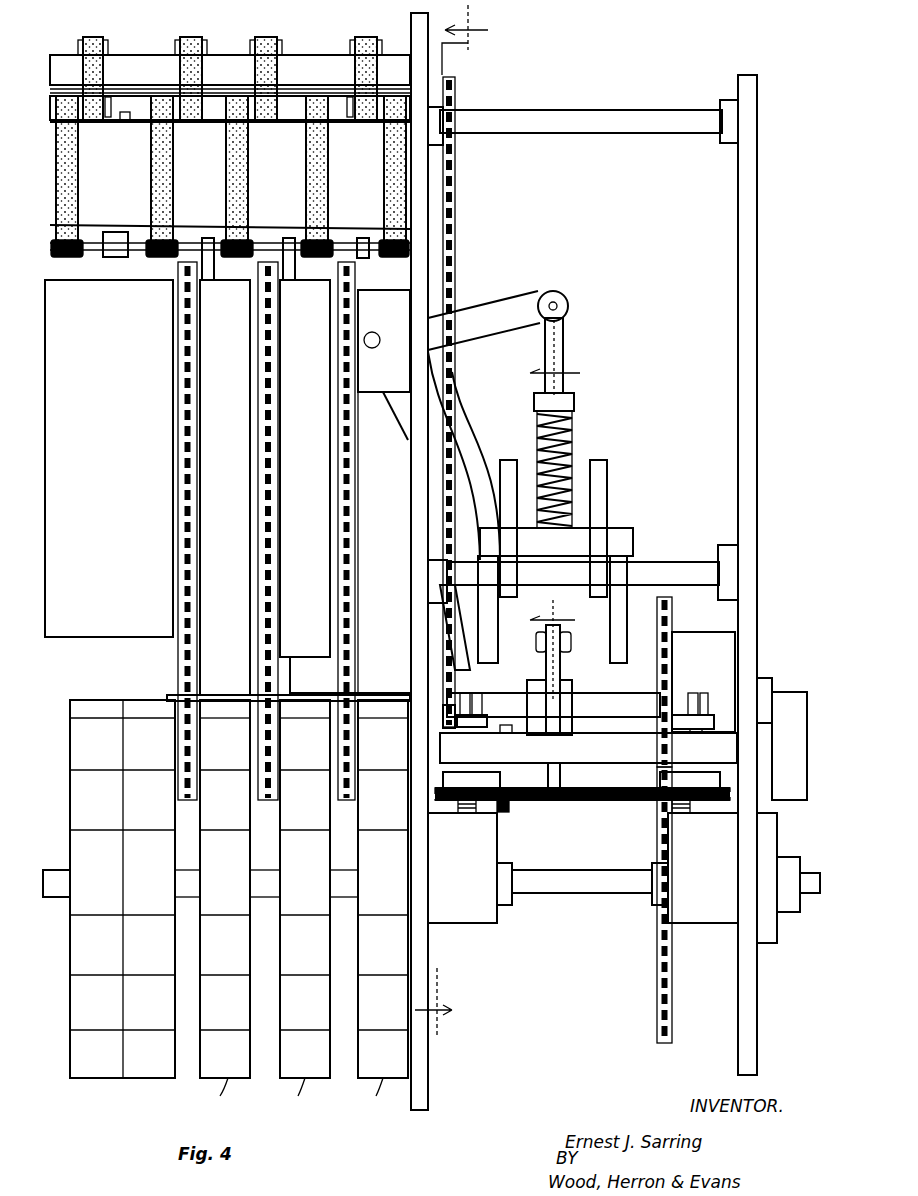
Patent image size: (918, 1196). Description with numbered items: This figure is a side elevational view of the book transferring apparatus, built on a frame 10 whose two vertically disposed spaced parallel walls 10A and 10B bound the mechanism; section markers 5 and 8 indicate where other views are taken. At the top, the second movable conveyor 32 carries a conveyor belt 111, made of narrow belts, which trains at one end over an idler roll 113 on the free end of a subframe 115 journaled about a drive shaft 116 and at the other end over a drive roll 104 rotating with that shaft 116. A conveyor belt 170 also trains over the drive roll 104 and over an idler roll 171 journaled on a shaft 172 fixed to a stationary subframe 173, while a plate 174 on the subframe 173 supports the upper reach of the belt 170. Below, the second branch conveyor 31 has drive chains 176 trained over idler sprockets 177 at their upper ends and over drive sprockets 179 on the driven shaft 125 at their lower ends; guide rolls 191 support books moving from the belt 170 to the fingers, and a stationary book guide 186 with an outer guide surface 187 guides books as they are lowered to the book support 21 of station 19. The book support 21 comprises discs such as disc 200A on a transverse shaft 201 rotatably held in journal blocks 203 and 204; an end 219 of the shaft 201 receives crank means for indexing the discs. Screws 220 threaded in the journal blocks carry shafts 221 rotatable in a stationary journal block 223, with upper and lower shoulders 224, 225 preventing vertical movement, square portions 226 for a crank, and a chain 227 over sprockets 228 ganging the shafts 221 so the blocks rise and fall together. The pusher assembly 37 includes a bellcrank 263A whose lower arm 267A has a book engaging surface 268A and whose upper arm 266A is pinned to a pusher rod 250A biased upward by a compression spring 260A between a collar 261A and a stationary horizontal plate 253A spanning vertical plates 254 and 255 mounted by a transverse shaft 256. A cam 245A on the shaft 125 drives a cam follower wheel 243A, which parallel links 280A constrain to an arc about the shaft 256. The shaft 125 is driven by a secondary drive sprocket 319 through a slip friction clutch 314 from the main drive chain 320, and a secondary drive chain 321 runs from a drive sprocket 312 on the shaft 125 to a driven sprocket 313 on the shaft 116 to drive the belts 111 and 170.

The frame 10 is at (758, 48).
The frame wall 10A is at (430, 1070).
The frame wall 10B is at (757, 1052).
The section line 5- 5 is at (458, 520).
The section line 8- 8 is at (563, 498).
The station 19 is at (78, 687).
The book support 21 is at (218, 904).
The second branch conveyor 31 is at (150, 517).
The second movable conveyor 32 is at (60, 49).
The pusher assembly 37 is at (486, 458).
The drive roll 104 is at (113, 110).
The conveyor belt 111 is at (205, 68).
The idler roll 113 is at (105, 47).
The subframe 115 is at (230, 55).
The drive shaft 116 is at (572, 126).
The driven shaft 125 is at (312, 695).
The conveyor belt 170 is at (152, 170).
The idler roll 171 is at (288, 236).
The shaft 172 is at (98, 240).
The stationary subframe 173 is at (230, 262).
The plate 174 is at (212, 190).
The drive chains 176 is at (183, 405).
The idler sprockets 177 is at (258, 318).
The drive sprockets 179 is at (258, 698).
The stationary book guide 186 is at (89, 458).
The outer guide surface 187 is at (30, 398).
The guide rolls 191 is at (363, 236).
The disc 200A is at (123, 1078).
The shaft 201 is at (40, 897).
The journal block 203 is at (470, 923).
The journal block 204 is at (703, 923).
The end of shaft 219 is at (810, 862).
The screws 220 is at (470, 813).
The shafts 221 is at (505, 735).
The stationary journal block 223 is at (588, 748).
The upper shoulders 224 is at (460, 772).
The lower shoulders 225 is at (467, 727).
The square cross-section portions 226 is at (470, 693).
The chain 227 is at (600, 805).
The sprockets 228 is at (509, 806).
The cam follower wheel 243A is at (526, 625).
The cam 245A is at (550, 776).
The pusher rod 250A is at (563, 335).
The stationary horizontal plate 253A is at (618, 545).
The stationary vertical plate 254 is at (628, 552).
The stationary vertical plate 255 is at (492, 560).
The transverse shaft 256 is at (745, 578).
The compression spring 260A is at (572, 430).
The collar 261A is at (574, 400).
The bellcrank 263A is at (470, 318).
The upper arm 266A is at (540, 290).
The lower arm 267A is at (445, 470).
The book engaging surface 268A is at (438, 606).
The parallel links 280A is at (516, 472).
The drive sprocket 312 is at (440, 688).
The driven sprocket 313 is at (462, 118).
The slip friction clutch 314 is at (730, 632).
The secondary drive sprocket 319 is at (670, 655).
The main drive chain 320 is at (656, 1000).
The secondary drive chain 321 is at (458, 214).